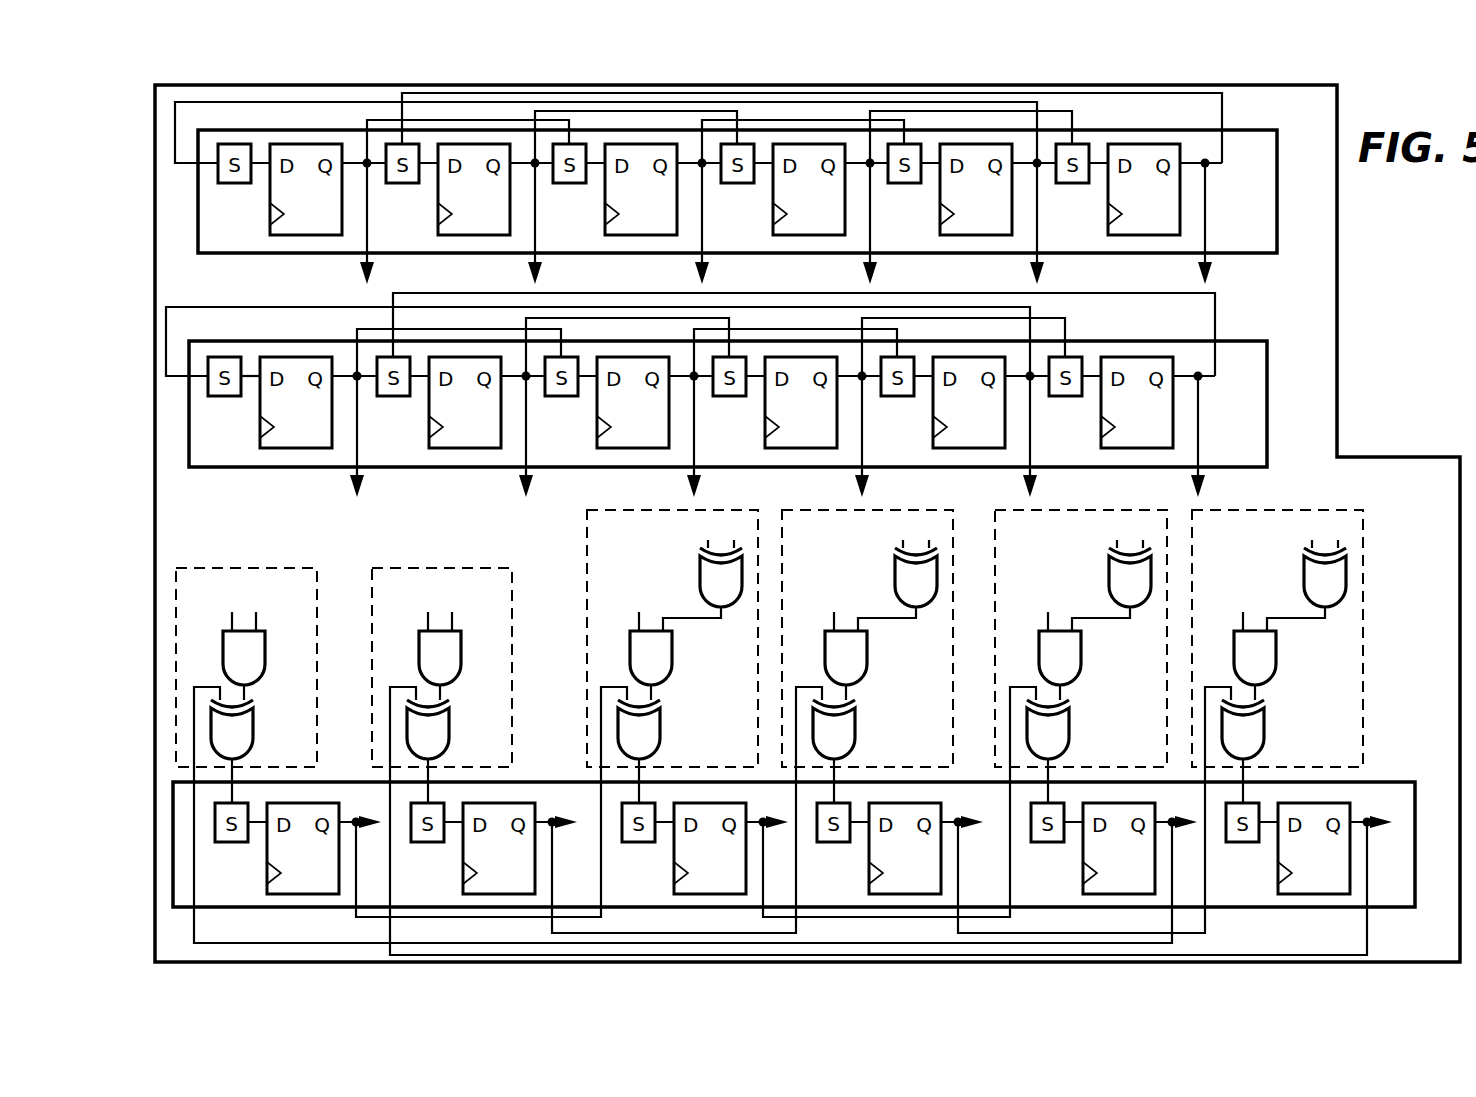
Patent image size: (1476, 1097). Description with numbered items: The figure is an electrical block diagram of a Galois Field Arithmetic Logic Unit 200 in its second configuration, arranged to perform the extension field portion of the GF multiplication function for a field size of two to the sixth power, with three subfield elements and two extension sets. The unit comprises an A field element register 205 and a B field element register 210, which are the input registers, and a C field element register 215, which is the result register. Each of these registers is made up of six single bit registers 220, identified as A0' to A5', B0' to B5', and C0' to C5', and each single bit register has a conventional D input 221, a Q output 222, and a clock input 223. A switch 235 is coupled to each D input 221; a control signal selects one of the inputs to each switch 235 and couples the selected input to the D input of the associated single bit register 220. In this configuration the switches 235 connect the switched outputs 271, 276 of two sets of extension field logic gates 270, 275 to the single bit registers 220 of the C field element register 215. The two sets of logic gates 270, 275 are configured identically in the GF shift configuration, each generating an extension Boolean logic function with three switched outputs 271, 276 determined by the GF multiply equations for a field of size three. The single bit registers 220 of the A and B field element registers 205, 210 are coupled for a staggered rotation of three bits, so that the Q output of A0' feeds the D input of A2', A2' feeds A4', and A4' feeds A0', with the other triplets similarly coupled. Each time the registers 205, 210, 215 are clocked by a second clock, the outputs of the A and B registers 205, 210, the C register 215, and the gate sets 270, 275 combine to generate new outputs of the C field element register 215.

The Galois Field Arithmetic Logic Unit 200 is at (1337, 275).
The A field element register 205 is at (1277, 215).
The B field element register 210 is at (1267, 428).
The C field element register 215 is at (1373, 782).
The single bit register 220 is at (826, 238).
The D input 221 is at (240, 375).
The Q output 222 is at (337, 377).
The clock input 223 is at (262, 426).
The switch 235 is at (238, 397).
The set of extension field logic gates 270 is at (262, 568).
The switched output 271 is at (236, 771).
The set of extension field logic gates 275 is at (458, 568).
The switched output 276 is at (432, 771).